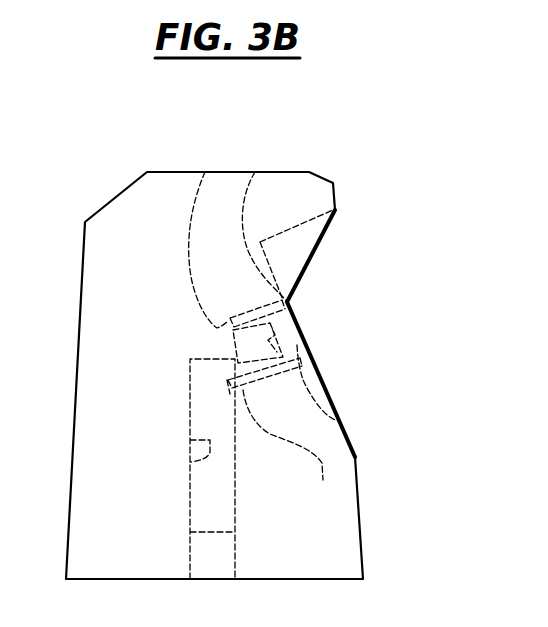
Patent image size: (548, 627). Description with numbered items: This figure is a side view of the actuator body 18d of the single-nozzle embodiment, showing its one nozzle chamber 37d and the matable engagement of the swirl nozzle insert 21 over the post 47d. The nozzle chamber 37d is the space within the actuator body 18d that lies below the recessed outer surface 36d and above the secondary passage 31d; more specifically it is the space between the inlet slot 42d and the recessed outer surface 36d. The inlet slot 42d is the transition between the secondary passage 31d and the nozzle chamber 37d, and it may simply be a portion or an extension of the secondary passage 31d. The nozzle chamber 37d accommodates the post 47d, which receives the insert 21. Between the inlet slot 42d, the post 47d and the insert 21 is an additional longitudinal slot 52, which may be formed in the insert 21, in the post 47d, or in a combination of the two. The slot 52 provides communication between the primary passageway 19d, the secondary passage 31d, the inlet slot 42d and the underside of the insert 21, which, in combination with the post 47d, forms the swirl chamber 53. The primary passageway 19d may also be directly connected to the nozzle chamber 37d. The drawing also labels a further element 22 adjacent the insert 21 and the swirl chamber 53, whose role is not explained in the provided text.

The actuator body 18d is at (206, 351).
The post 47d is at (205, 172).
The nozzle chamber 37d is at (255, 172).
The recessed outer surface 36d is at (268, 262).
The swirl chamber 53 is at (283, 317).
The latch body 22 is at (282, 334).
The swirl nozzle insert 21 is at (316, 347).
The inlet slot 42d is at (232, 342).
The longitudinal slot 52 is at (340, 421).
The primary passageway 19d is at (190, 462).
The secondary passage 31d is at (295, 453).